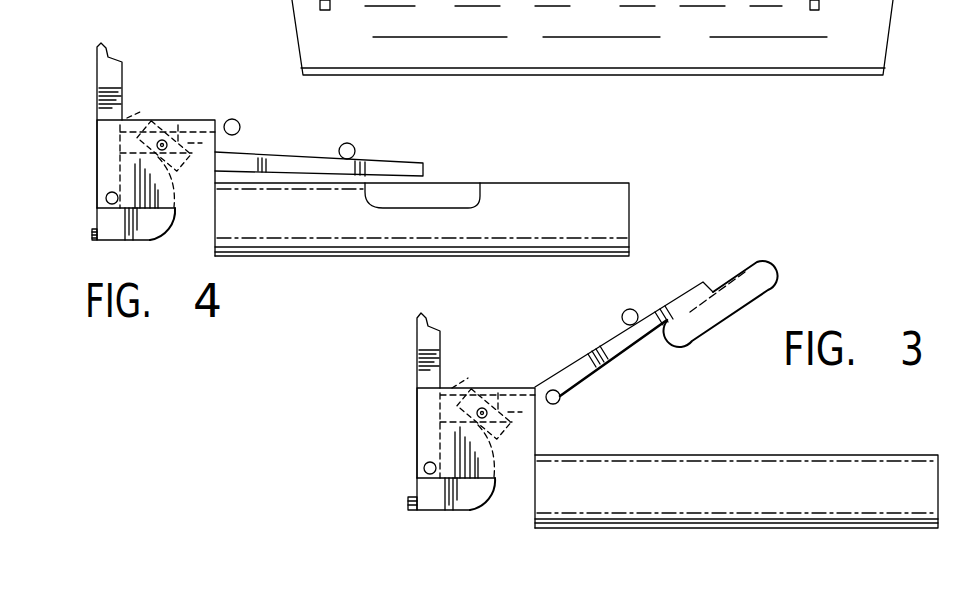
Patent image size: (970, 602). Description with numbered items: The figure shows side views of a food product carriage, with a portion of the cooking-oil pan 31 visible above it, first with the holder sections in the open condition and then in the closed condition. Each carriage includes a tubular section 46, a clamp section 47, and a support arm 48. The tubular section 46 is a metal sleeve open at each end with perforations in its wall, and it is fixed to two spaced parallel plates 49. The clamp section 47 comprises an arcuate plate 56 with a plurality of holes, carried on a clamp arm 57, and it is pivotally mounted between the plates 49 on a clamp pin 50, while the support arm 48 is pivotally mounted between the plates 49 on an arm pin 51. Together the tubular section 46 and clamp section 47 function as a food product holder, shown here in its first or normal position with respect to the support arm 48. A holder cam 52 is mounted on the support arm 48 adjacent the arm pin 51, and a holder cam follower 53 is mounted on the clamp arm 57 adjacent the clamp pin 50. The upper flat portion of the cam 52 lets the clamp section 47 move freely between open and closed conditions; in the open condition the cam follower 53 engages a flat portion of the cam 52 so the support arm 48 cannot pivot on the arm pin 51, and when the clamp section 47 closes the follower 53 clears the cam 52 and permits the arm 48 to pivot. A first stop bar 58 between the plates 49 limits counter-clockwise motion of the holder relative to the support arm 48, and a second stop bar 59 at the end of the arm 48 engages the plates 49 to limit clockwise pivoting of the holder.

In FIG. 4, the pan 31 is at (866, 25).
In FIG. 3, the tubular section 46 is at (802, 470).
In FIG. 3, the clamp section 47 is at (740, 271).
In FIG. 4, the support arm 48 is at (108, 72).
In FIG. 3, the support arm 48 is at (441, 333).
In FIG. 3, the plates 49 is at (523, 437).
In FIG. 3, the clamp pin 50 is at (486, 409).
In FIG. 3, the arm pin 51 is at (424, 468).
In FIG. 4, the holder cam 52 is at (156, 240).
In FIG. 3, the holder cam 52 is at (472, 510).
In FIG. 4, the holder cam follower 53 is at (155, 128).
In FIG. 3, the holder cam follower 53 is at (470, 408).
In FIG. 3, the arcuate plate 56 is at (769, 288).
In FIG. 3, the clamp arm 57 is at (689, 296).
In FIG. 4, the first stop bar 58 is at (127, 118).
In FIG. 3, the first stop bar 58 is at (457, 381).
In FIG. 4, the second stop bar 59 is at (92, 238).